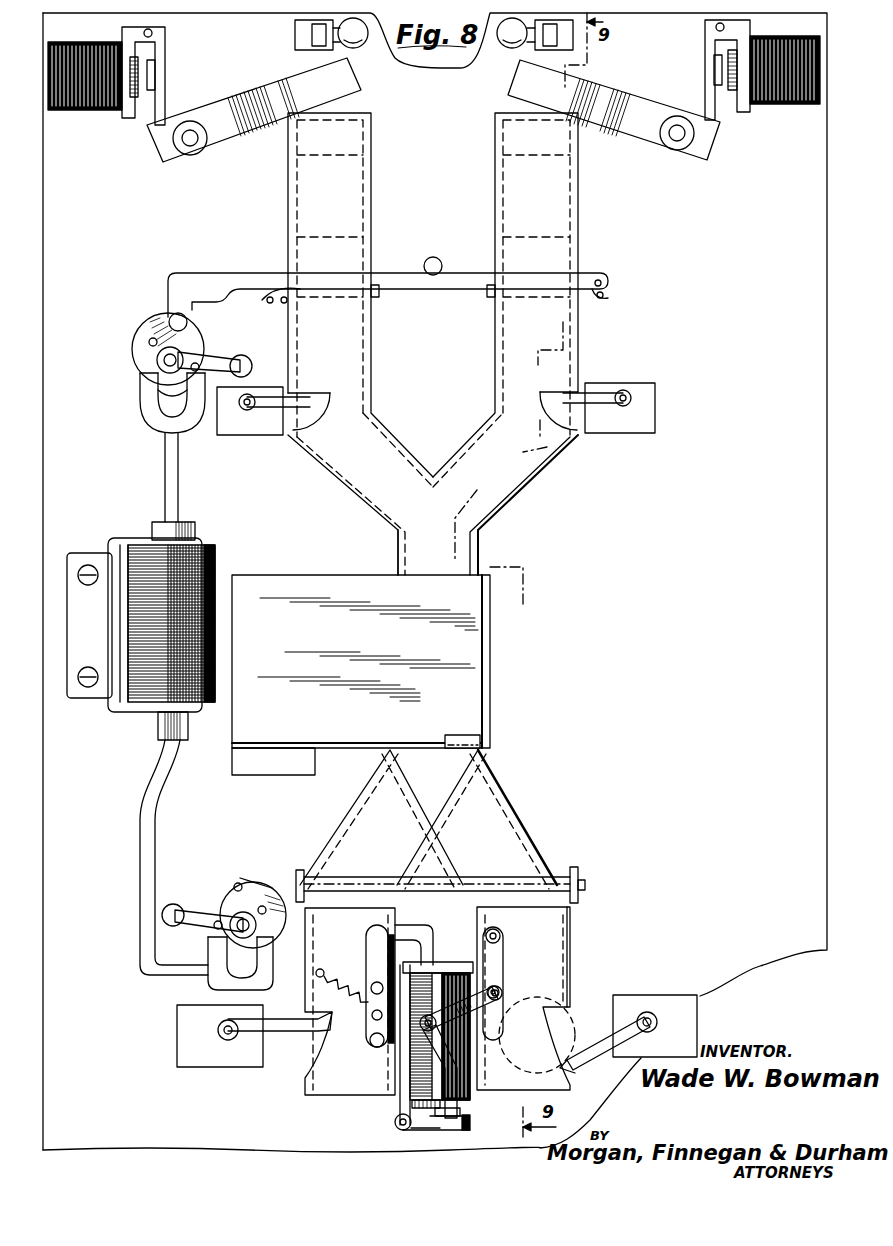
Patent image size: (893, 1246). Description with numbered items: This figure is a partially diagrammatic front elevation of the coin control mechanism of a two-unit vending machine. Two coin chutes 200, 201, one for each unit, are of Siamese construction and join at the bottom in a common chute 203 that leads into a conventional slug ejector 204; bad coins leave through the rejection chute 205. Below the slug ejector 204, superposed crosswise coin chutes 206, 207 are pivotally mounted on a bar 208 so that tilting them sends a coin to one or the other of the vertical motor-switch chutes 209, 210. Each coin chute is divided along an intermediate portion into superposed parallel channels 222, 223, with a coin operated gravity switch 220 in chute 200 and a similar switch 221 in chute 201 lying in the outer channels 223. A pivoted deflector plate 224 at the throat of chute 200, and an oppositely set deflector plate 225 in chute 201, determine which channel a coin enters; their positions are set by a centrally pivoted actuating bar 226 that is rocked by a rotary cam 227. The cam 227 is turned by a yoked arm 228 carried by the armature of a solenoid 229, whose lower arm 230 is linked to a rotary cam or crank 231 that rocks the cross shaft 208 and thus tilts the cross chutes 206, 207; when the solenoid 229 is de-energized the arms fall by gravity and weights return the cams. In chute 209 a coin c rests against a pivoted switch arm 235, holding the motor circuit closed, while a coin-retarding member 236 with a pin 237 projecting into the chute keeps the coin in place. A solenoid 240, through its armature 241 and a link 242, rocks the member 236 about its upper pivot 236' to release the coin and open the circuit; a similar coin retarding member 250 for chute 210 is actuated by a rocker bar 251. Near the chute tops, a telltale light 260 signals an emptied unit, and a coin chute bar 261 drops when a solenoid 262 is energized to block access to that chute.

The coin chute 200 is at (578, 255).
The coin chute 201 is at (290, 238).
The common chute 203 is at (398, 545).
The slug ejector 204 is at (361, 661).
The rejection chute 205 is at (240, 770).
The cross chute 206 is at (503, 801).
The cross chute 207 is at (356, 810).
The bar 208 is at (586, 882).
The vertical chute 209 is at (553, 947).
The vertical chute 210 is at (350, 1001).
The coin operated gravity switch 220 is at (577, 430).
The coin operated gravity switch 221 is at (293, 430).
The parallel channel 222 is at (562, 203).
The outer channel 223 is at (307, 190).
The deflector plate 224 is at (553, 233).
The deflector plate 225 is at (307, 237).
The actuating bar 226 is at (463, 268).
The rotary cam 227 is at (131, 334).
The yoked arm 228 is at (164, 465).
The solenoid 229 is at (216, 560).
The lower arm 230 is at (153, 772).
The rotary cam or crank 231 is at (256, 877).
The pivoted switch arm 235 is at (628, 1042).
The coin-retarding member 236 is at (554, 983).
The upper pivot 236' is at (561, 923).
The pin 237 is at (491, 1092).
The solenoid 240 is at (422, 1078).
The armature 241 is at (399, 1132).
The link 242 is at (503, 998).
The coin retarding member 250 is at (368, 1040).
The rocker bar 251 is at (422, 933).
The telltale light 260 is at (357, 49).
The coin chute bar 261 is at (243, 143).
The solenoid 262 is at (82, 112).
The coin c is at (572, 1020).